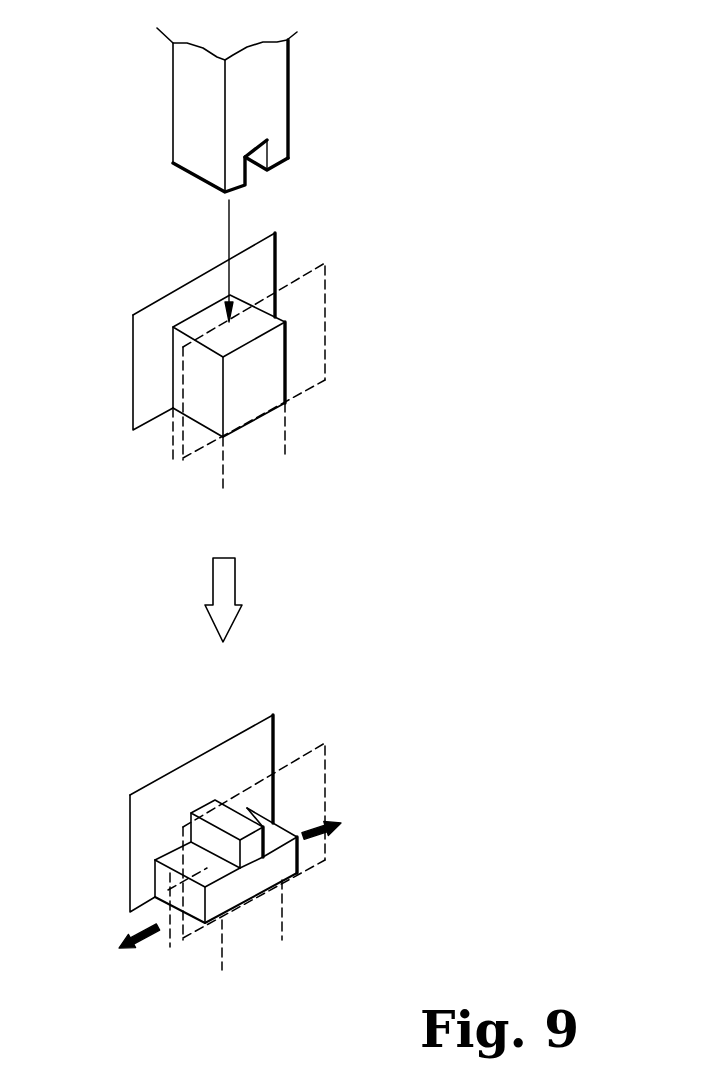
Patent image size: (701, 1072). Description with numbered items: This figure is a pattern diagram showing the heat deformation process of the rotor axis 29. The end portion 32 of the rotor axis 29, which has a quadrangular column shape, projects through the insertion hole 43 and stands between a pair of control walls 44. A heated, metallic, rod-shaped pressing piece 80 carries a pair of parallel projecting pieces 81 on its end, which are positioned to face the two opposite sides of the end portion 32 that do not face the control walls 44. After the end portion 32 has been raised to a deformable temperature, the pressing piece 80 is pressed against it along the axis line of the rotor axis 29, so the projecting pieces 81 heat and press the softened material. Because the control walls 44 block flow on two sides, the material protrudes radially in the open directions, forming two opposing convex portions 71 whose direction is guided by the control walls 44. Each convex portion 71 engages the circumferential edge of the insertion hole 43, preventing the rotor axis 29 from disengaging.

The pressing piece 80 is at (293, 73).
The projecting pieces 81 is at (277, 148).
The control wall 44 is at (263, 260).
The end portion 32 is at (202, 322).
The rotor axis 29 is at (172, 357).
The insertion hole 43 is at (207, 423).
The convex portions 71 is at (281, 835).